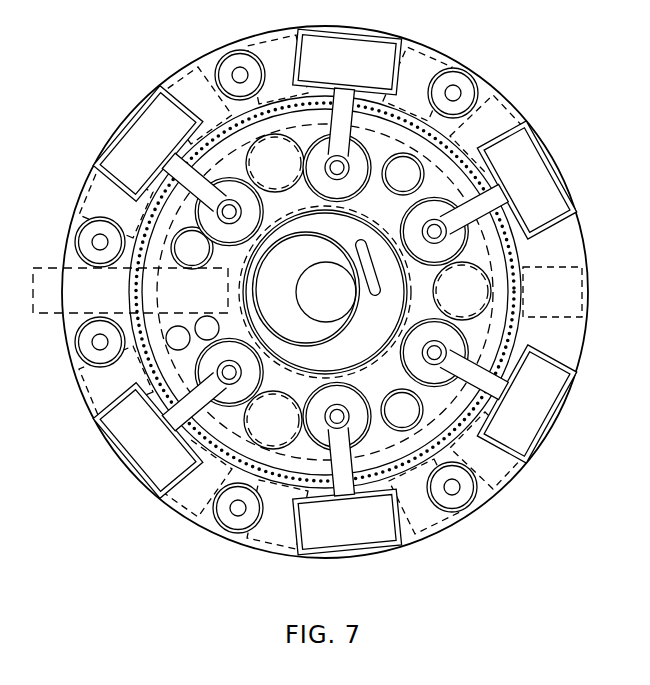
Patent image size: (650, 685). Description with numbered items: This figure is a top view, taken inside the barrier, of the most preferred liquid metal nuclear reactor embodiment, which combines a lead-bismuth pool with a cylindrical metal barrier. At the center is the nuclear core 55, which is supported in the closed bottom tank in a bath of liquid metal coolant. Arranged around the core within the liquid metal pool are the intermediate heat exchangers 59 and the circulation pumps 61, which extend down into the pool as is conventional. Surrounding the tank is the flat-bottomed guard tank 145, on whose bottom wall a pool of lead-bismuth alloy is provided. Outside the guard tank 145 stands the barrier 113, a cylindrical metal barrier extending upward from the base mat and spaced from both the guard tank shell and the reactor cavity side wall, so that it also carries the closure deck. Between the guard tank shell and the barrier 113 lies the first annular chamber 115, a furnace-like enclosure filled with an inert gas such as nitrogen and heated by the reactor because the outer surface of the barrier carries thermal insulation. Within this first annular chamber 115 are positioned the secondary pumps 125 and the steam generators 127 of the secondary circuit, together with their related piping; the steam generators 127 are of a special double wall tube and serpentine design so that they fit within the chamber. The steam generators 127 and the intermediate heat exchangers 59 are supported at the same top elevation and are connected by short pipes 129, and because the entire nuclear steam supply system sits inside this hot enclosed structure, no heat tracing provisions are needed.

The nuclear core 55 is at (318, 302).
The heat exchanger 59 is at (245, 231).
The circulation pump 61 is at (267, 174).
The barrier 113 is at (586, 309).
The first annular chamber 115 is at (448, 63).
The secondary pump 125 is at (236, 66).
The steam generator 127 is at (336, 72).
The short pipe 129 is at (173, 163).
The guard tank 145 is at (530, 282).